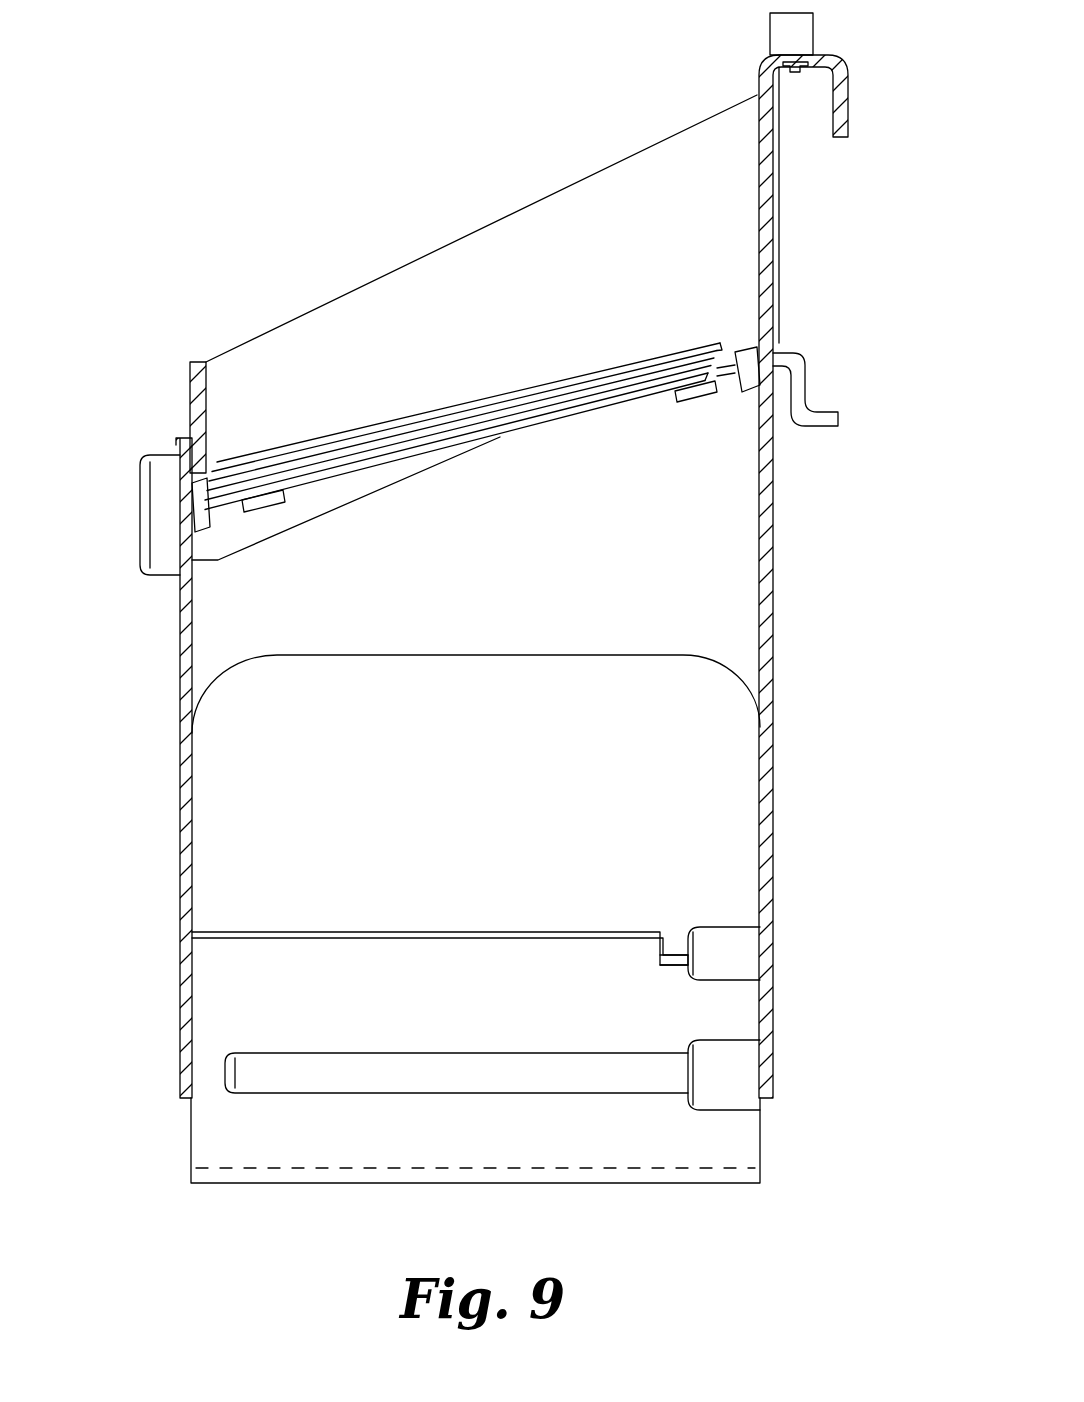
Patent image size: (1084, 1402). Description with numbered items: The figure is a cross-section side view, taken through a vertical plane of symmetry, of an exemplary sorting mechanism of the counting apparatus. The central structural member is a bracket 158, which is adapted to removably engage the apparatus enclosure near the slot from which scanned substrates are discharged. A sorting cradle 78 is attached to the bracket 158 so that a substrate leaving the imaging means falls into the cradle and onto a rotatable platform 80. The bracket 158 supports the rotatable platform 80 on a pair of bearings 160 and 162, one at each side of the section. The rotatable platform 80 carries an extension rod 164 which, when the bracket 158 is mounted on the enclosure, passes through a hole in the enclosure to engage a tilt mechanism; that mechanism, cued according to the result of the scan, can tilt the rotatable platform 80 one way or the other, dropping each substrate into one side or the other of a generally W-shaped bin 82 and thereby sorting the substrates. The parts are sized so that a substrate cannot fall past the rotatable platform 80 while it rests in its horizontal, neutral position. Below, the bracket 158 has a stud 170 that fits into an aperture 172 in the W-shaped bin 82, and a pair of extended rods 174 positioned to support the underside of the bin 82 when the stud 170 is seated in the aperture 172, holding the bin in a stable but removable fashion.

The sorting cradle 78 is at (400, 292).
The rotatable platform 80 is at (450, 460).
The W-shaped bin 82 is at (542, 682).
The bracket 158 is at (775, 612).
The bearing 160 is at (777, 370).
The bearing 162 is at (140, 503).
The extension rod 164 is at (825, 410).
The stud 170 is at (715, 927).
The aperture 172 is at (660, 950).
The extended rods 174 is at (268, 1052).